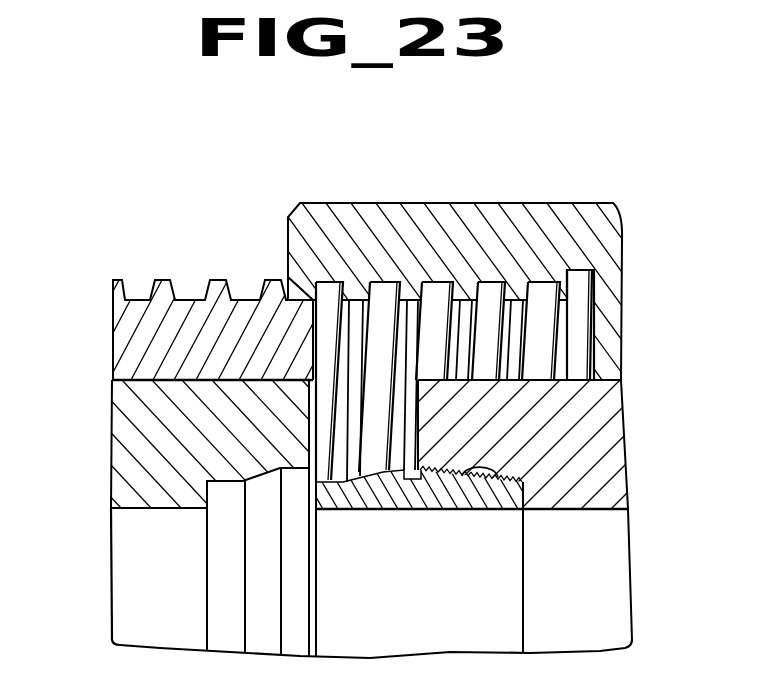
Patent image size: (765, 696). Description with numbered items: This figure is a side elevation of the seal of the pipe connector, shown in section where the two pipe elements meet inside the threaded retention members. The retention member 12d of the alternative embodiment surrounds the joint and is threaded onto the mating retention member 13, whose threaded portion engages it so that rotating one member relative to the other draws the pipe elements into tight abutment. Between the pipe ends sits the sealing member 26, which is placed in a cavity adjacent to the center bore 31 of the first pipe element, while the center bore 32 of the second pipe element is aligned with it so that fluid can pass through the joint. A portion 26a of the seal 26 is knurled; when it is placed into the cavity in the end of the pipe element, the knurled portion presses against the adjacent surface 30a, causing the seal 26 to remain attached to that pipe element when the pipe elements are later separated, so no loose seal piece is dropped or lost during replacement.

The retention member 12d is at (605, 228).
The retention member 13 is at (118, 323).
The sealing member 26 is at (367, 500).
The knurled portion 26a is at (497, 483).
The surface 30a is at (458, 483).
The center bore 31 is at (606, 596).
The center bore 32 is at (162, 600).